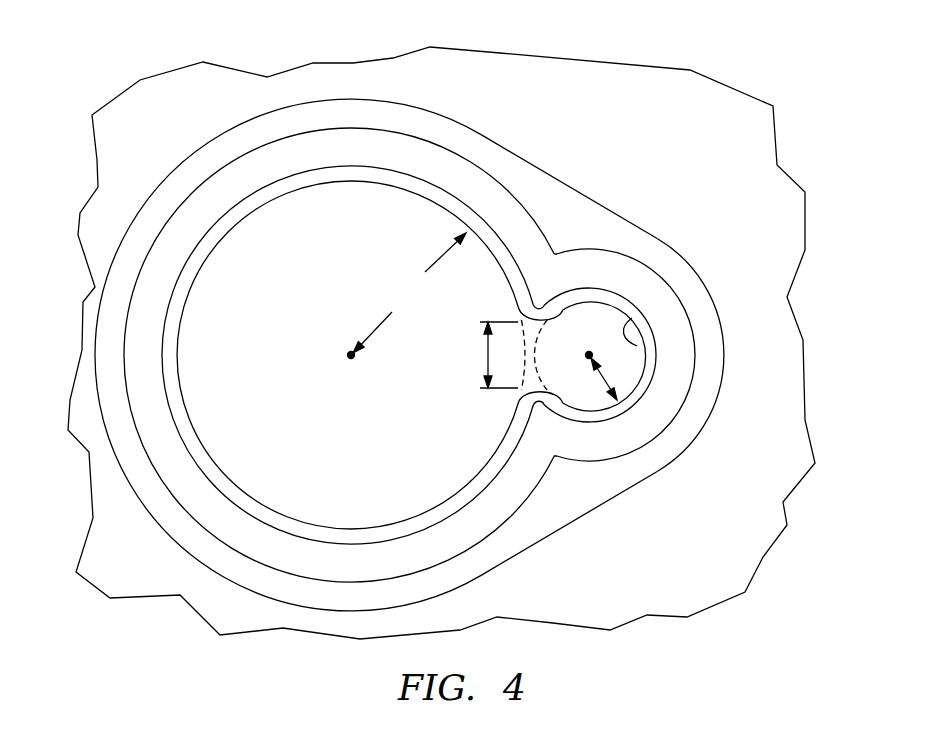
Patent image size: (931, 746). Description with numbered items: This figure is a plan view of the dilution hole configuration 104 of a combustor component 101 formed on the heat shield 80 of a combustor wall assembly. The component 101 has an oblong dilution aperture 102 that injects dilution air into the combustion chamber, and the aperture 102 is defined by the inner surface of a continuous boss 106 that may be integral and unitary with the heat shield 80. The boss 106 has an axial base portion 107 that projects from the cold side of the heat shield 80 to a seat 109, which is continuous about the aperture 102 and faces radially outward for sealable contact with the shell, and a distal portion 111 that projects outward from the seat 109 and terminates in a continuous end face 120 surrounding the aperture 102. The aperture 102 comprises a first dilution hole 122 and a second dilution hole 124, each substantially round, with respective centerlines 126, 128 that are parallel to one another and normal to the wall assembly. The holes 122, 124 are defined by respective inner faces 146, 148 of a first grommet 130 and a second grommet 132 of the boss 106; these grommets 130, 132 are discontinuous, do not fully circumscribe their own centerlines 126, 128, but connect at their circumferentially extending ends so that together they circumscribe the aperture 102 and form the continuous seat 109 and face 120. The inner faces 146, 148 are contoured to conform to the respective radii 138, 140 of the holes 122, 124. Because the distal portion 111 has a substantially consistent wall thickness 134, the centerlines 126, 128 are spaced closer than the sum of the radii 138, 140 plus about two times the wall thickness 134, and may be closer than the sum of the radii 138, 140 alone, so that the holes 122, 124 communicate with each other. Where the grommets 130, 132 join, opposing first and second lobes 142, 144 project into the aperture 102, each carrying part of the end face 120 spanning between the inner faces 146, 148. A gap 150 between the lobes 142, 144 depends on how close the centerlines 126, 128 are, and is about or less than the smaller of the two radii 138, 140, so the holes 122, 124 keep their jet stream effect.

The heat shield 80 is at (722, 117).
The combustor component 101 is at (460, 325).
The dilution aperture 102 is at (409, 316).
The dilution hole configuration 104 is at (289, 170).
The boss 106 is at (398, 133).
The axial base portion 107 is at (568, 188).
The seat 109 is at (527, 197).
The distal portion 111 is at (160, 232).
The end face 120 is at (452, 158).
The first dilution hole 122 is at (370, 355).
The second dilution hole 124 is at (668, 356).
The first centerline 126 is at (350, 357).
The second centerline 128 is at (592, 355).
The first grommet 130 is at (233, 232).
The second grommet 132 is at (673, 303).
The wall thickness 134 is at (510, 529).
The first radius 138 is at (409, 293).
The second radius 140 is at (626, 383).
The first lobe 142 is at (555, 252).
The second lobe 144 is at (537, 418).
The first inner face 146 is at (178, 353).
The second inner face 148 is at (643, 343).
The gap 150 is at (486, 357).